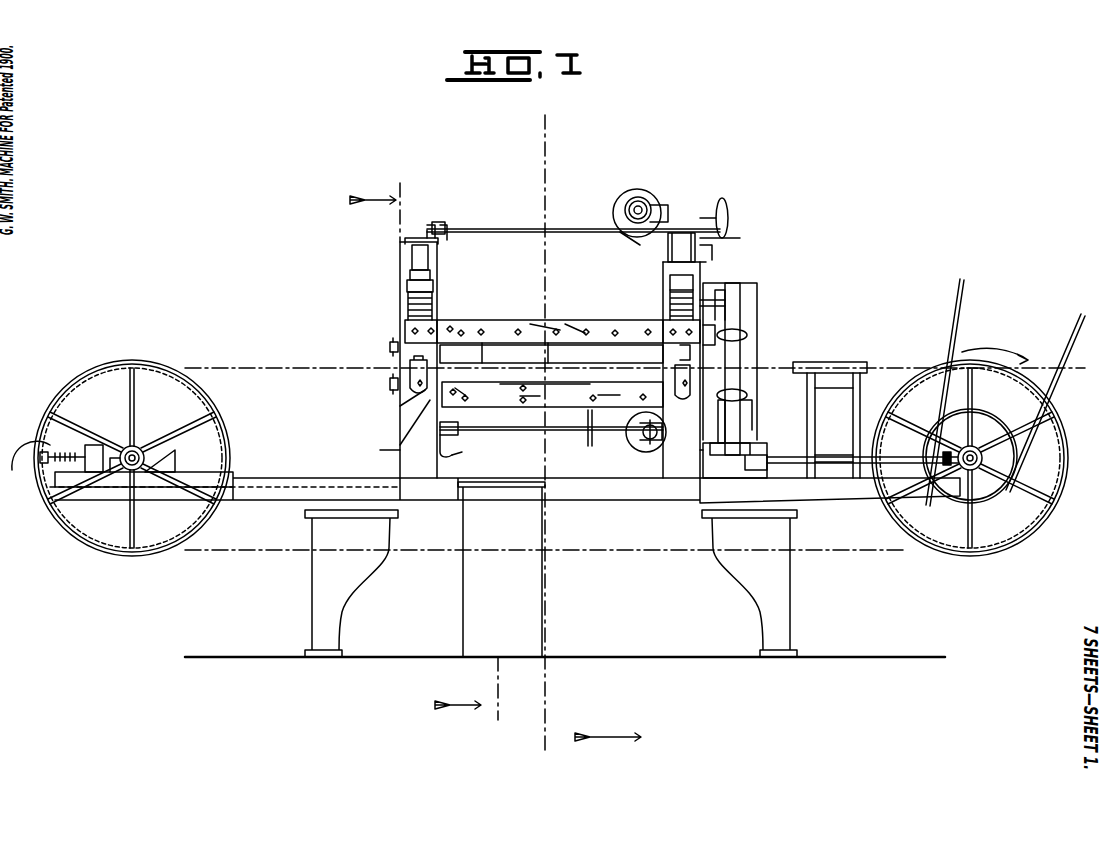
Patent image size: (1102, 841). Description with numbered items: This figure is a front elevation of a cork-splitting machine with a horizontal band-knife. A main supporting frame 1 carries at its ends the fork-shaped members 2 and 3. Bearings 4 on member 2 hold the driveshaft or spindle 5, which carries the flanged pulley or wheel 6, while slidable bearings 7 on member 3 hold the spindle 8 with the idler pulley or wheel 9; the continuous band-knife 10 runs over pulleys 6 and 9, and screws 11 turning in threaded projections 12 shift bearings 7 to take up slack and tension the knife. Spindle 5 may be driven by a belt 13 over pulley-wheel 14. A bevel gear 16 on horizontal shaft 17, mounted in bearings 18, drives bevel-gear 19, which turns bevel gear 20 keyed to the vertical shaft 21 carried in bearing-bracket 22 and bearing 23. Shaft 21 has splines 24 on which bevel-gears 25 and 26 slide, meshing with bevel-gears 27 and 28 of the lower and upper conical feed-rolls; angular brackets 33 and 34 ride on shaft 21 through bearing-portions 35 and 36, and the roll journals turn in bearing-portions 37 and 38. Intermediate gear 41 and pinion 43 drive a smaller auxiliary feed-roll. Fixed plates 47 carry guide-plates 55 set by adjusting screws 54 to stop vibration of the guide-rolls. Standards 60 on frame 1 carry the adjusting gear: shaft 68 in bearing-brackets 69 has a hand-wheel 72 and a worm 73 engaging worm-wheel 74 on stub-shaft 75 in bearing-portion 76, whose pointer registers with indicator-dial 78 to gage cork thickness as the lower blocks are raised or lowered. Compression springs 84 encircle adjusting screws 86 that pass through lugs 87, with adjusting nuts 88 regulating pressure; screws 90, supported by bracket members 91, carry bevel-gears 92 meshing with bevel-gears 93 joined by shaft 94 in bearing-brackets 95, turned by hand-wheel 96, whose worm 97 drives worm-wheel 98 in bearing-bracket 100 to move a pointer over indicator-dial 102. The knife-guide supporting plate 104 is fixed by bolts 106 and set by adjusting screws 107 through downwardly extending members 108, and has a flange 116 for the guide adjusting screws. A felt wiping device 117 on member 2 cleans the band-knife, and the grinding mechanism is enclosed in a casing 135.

The main supporting frame 1 is at (305, 584).
The fork-shaped element or member 2 is at (842, 515).
The fork-shaped element or member 3 is at (240, 572).
The bearings 4 is at (1070, 482).
The driveshaft or spindle 5 is at (985, 458).
The flanged pulley or wheel 6 is at (1062, 500).
The bearings 7 is at (162, 472).
The shaft or spindle 8 is at (136, 452).
The flanged pulley or wheel 9 is at (106, 551).
The band-knife 10 is at (258, 368).
The screws 11 is at (75, 465).
The screw-threaded projections 12 is at (92, 445).
The belt 13 is at (1075, 338).
The pulley-wheel 14 is at (998, 420).
The bevel gear 16 is at (947, 468).
The horizontal shaft 17 is at (818, 455).
The bearings 18 is at (776, 452).
The bevel-gear 19 is at (735, 461).
The bevel gear 20 is at (680, 478).
The vertical shaft 21 is at (740, 370).
The bearing-bracket 22 is at (747, 420).
The bearing 23 is at (740, 300).
The splines 24 is at (780, 362).
The bevel-gear 25 is at (747, 396).
The bevel-gear 26 is at (747, 330).
The bevel-gear 27 is at (681, 370).
The bevel-gear 28 is at (748, 340).
The angular bracket 33 is at (717, 421).
The angular bracket 34 is at (735, 268).
The bearing-portion 35 is at (834, 392).
The bearing-portion 36 is at (745, 298).
The bearing-portion 37 is at (683, 382).
The bearing-portion 38 is at (679, 349).
The intermediate gear 41 is at (390, 348).
The pinion 43 is at (393, 340).
The stationary or fixed plates 47 is at (475, 325).
The adjusting screws 54 is at (555, 324).
The guide-plates or elements 55 is at (515, 324).
The standard 60 is at (405, 305).
The laterally extending shaft 68 is at (479, 441).
The bearing-brackets 69 is at (471, 460).
The hand-wheel 72 is at (575, 420).
The worm 73 is at (610, 420).
The worm-wheel 74 is at (586, 428).
The stub-shaft 75 is at (615, 440).
The bearing-portion 76 is at (630, 445).
The indicator-dial 78 is at (640, 448).
The compression spring 84 is at (433, 298).
The adjusting screws 86 is at (760, 258).
The lug or projection 87 is at (433, 285).
The adjusting nuts 88 is at (410, 275).
The screw 90 is at (412, 258).
The bracket-like member or element 91 is at (663, 262).
The bevel-gear 92 is at (432, 225).
The bevel-gear 93 is at (447, 226).
The laterally extending shaft 94 is at (580, 232).
The bearing-brackets 95 is at (668, 250).
The hand-wheel 96 is at (728, 210).
The worm 97 is at (619, 244).
The worm-wheel 98 is at (645, 200).
The bearing-bracket 100 is at (672, 210).
The indicator-dial 102 is at (640, 190).
The supporting plate or element 104 is at (400, 465).
The bolts 106 is at (410, 368).
The adjusting screws 107 is at (400, 445).
The downwardly extending members 108 is at (400, 406).
The flange 116 is at (552, 331).
The cleaning or wiping device 117 is at (845, 362).
The casing or cover 135 is at (543, 585).